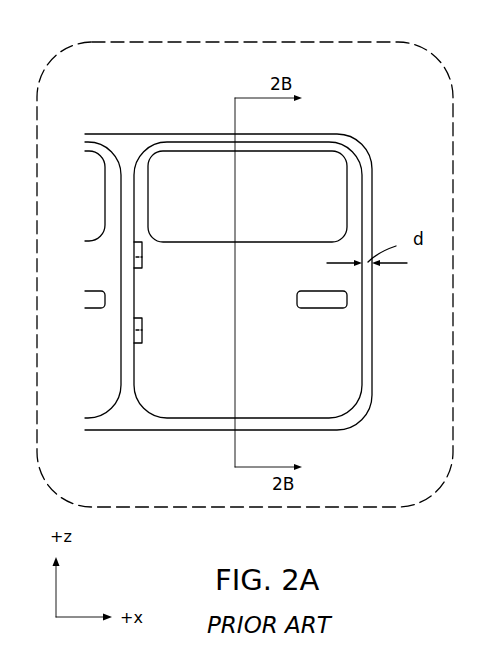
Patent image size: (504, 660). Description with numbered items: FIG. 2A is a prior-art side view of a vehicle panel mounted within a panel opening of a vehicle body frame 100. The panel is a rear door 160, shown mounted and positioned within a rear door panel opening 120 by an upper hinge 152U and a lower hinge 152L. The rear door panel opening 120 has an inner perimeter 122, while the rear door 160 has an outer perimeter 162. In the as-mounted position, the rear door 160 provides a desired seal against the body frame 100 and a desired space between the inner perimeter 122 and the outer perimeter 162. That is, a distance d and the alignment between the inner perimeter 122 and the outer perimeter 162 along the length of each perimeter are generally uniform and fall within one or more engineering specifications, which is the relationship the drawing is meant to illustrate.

The body frame 100 is at (384, 93).
The rear door panel opening 120 is at (125, 140).
The inner perimeter 122 is at (365, 157).
The rear door 160 is at (289, 373).
The outer perimeter 162 is at (362, 212).
The upper hinge 152U is at (142, 257).
The lower hinge 152L is at (142, 330).